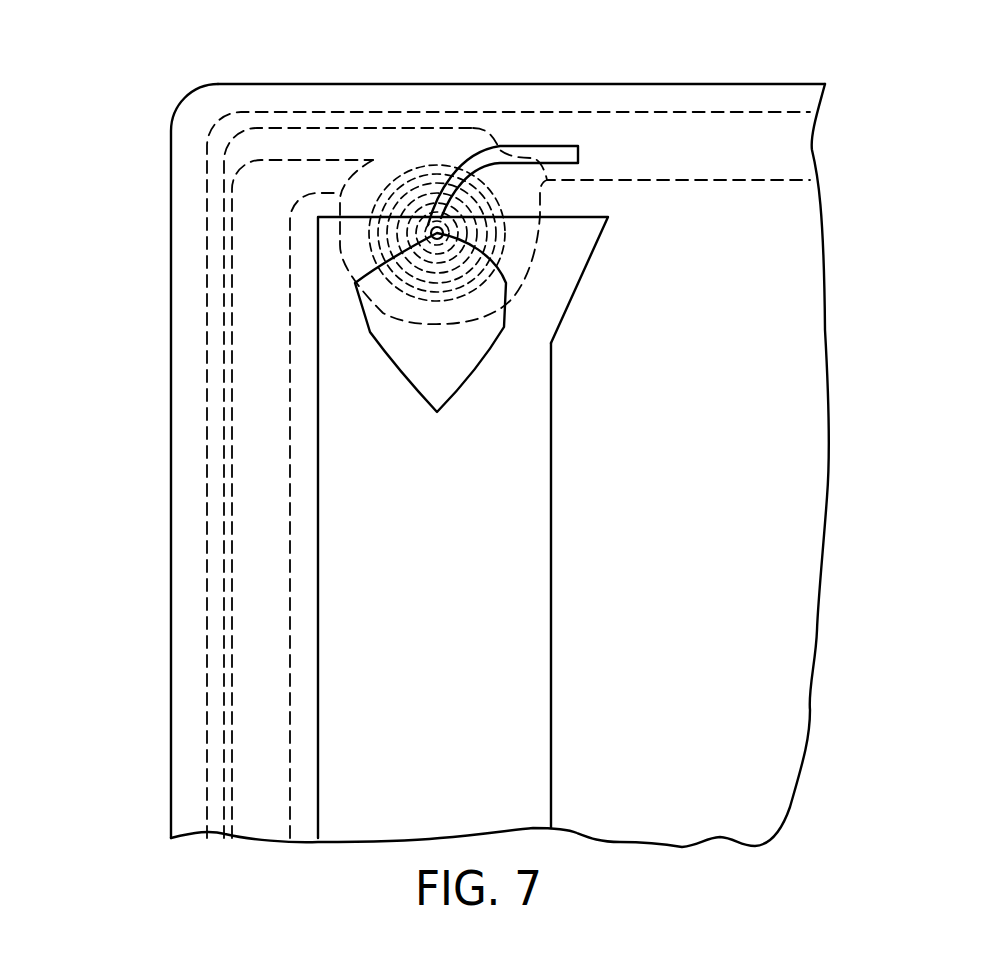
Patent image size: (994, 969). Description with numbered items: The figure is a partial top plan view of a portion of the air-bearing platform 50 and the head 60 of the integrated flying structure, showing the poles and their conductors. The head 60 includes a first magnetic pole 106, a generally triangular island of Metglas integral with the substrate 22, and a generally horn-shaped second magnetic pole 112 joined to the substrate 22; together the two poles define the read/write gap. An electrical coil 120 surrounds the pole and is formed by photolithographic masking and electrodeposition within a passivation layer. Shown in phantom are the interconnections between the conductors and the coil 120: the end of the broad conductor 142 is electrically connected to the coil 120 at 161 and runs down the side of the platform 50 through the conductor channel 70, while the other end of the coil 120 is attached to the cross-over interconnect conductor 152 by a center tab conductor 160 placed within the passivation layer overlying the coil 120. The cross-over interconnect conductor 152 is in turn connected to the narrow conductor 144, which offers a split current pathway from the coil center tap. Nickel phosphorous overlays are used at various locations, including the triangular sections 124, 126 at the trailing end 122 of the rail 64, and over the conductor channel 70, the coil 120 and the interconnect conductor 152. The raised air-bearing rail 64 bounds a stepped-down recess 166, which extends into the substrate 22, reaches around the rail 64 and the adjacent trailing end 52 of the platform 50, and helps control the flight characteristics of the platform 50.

The substrate 22 is at (825, 373).
The air-bearing platform 50 is at (171, 601).
The trailing end of platform 52 is at (448, 84).
The head 60 is at (431, 234).
The air-bearing rail 64 is at (540, 573).
The conductor channel 70 is at (290, 507).
The first magnetic pole 106 is at (515, 262).
The second magnetic pole 112 is at (450, 367).
The electrical coil 120 is at (420, 175).
The trailing end of rail 122 is at (580, 215).
The triangular section 124 is at (357, 257).
The triangular section 126 is at (445, 232).
The broad conductor 142 is at (253, 407).
The narrow conductor 144 is at (207, 323).
The cross-over interconnect conductor 152 is at (672, 140).
The center tab conductor 160 is at (549, 146).
The connection point 161 is at (382, 160).
The stepped-down recess 166 is at (741, 518).